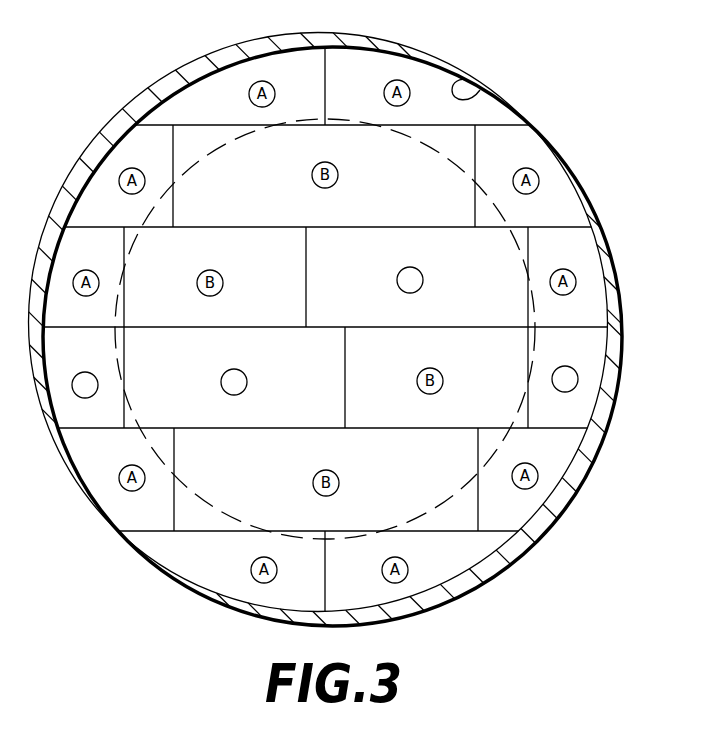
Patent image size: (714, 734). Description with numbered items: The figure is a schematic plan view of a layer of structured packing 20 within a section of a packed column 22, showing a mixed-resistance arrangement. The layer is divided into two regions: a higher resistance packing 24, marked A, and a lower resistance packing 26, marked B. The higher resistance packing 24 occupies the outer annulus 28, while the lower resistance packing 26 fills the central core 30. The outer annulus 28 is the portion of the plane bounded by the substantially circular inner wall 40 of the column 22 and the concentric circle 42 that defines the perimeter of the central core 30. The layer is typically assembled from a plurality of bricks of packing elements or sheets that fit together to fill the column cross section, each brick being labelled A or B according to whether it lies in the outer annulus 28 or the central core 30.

The layer of structured packing 20 is at (642, 85).
The packed column 22 is at (603, 222).
The higher resistance packing 24 is at (578, 381).
The lower resistance packing 26 is at (424, 280).
The outer annulus 28 is at (105, 364).
The central core 30 is at (205, 389).
The inner wall 40 is at (482, 90).
The concentric circle 42 is at (465, 487).